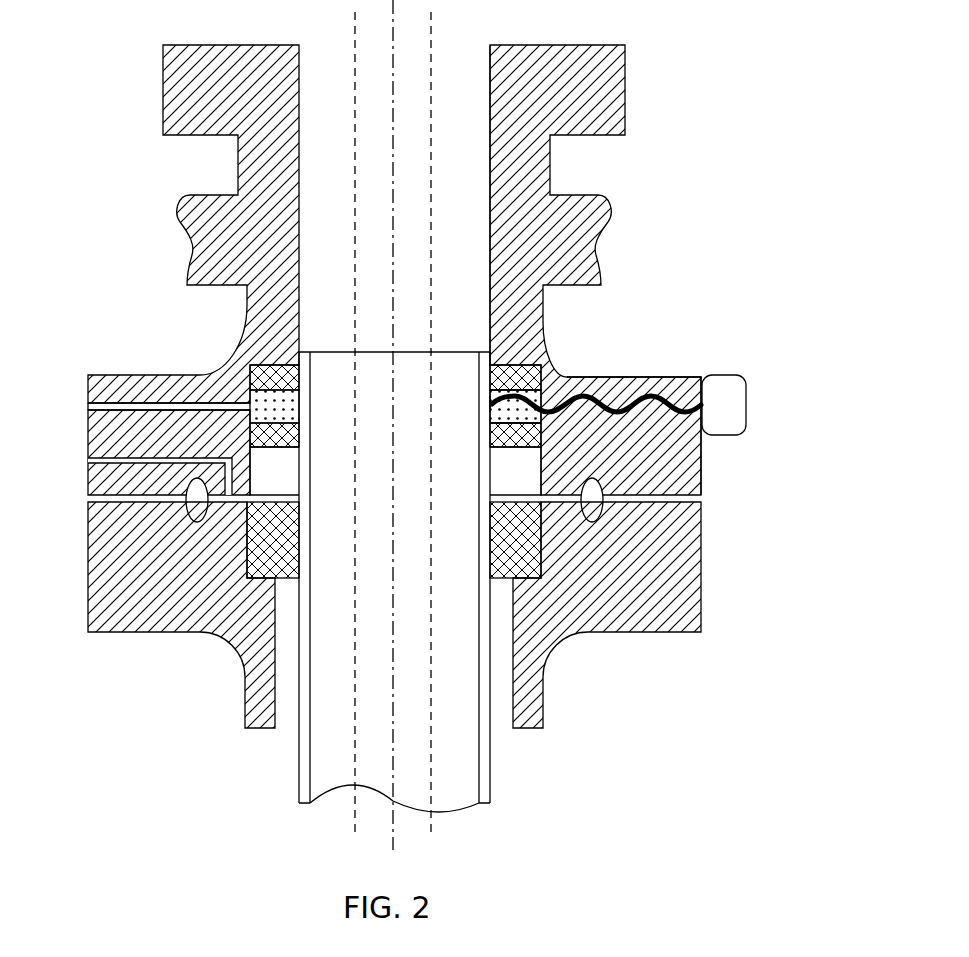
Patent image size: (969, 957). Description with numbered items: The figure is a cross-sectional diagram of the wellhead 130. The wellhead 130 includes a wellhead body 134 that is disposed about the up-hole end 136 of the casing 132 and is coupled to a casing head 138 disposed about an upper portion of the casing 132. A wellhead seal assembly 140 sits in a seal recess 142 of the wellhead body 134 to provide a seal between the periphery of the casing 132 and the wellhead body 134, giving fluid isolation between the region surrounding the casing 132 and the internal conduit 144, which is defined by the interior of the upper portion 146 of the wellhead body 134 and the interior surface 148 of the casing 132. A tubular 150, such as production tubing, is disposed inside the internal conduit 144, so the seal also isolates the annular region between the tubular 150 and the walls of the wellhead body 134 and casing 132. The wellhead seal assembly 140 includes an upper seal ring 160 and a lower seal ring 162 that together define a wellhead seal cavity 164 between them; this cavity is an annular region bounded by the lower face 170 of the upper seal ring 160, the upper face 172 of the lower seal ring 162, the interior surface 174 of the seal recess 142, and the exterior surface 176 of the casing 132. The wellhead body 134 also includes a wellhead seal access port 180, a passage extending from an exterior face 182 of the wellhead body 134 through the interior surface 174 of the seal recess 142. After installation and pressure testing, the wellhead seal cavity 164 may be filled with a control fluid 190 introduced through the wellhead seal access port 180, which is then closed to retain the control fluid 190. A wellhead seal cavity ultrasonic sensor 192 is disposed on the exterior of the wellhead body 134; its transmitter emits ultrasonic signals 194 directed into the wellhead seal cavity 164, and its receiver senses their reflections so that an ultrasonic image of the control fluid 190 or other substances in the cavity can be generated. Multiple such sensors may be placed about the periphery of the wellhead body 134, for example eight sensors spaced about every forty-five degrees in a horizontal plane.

The wellhead 130 is at (642, 28).
The casing 132 is at (492, 812).
The wellhead body 134 is at (607, 196).
The up-hole end 136 is at (313, 350).
The casing head 138 is at (706, 632).
The wellhead seal assembly 140 is at (523, 360).
The seal recess 142 is at (279, 481).
The internal conduit 144 is at (461, 69).
The upper portion 146 is at (488, 284).
The interior surface 148 is at (487, 540).
The tubular 150 is at (356, 24).
The upper seal ring 160 is at (299, 375).
The lower seal ring 162 is at (293, 433).
The wellhead seal cavity 164 is at (290, 410).
The lower face 170 is at (507, 383).
The upper face 172 is at (506, 429).
The interior surface 174 is at (252, 453).
The exterior surface 176 is at (489, 400).
The wellhead seal access port 180 is at (116, 400).
The exterior face 182 is at (86, 430).
The control fluid 190 is at (538, 393).
The wellhead seal cavity ultrasonic sensor 192 is at (734, 438).
The ultrasonic signals 194 is at (651, 393).